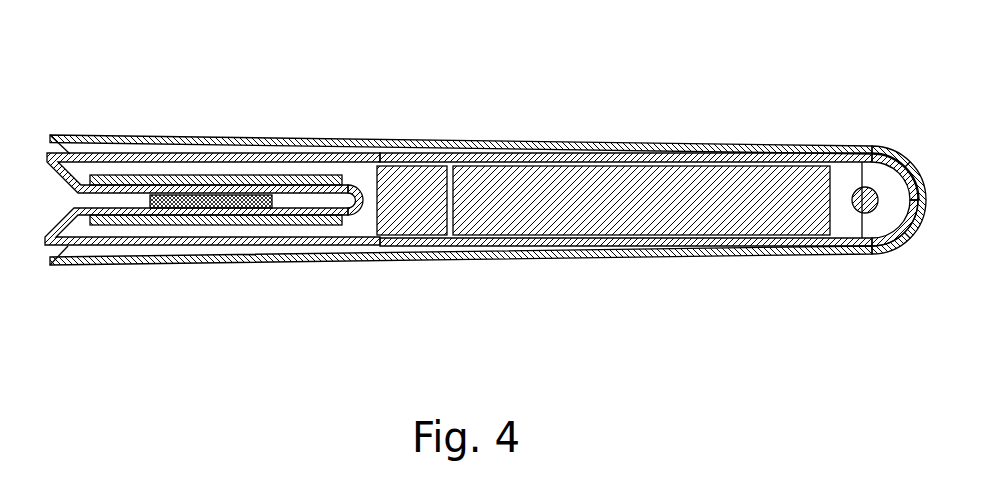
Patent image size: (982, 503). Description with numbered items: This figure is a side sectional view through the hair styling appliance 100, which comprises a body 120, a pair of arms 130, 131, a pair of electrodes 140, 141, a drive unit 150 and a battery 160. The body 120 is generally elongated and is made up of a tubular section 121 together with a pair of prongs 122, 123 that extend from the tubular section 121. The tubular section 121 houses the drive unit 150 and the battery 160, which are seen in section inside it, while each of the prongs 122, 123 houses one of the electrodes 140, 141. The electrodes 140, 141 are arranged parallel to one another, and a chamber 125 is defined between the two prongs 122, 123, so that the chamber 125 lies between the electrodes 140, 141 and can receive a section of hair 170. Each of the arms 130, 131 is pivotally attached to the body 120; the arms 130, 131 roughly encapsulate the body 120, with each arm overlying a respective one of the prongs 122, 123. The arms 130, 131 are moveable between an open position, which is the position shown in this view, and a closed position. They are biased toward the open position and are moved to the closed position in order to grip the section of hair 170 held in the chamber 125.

The hair styling appliance 100 is at (787, 77).
The body 120 is at (434, 245).
The tubular section 121 is at (525, 160).
The prong 122 is at (88, 153).
The prong 123 is at (88, 262).
The chamber 125 is at (298, 200).
The arm 130 is at (353, 140).
The arm 131 is at (352, 245).
The electrode 140 is at (167, 175).
The electrode 141 is at (165, 225).
The drive unit 150 is at (413, 177).
The battery 160 is at (635, 178).
The section of hair 170 is at (233, 195).